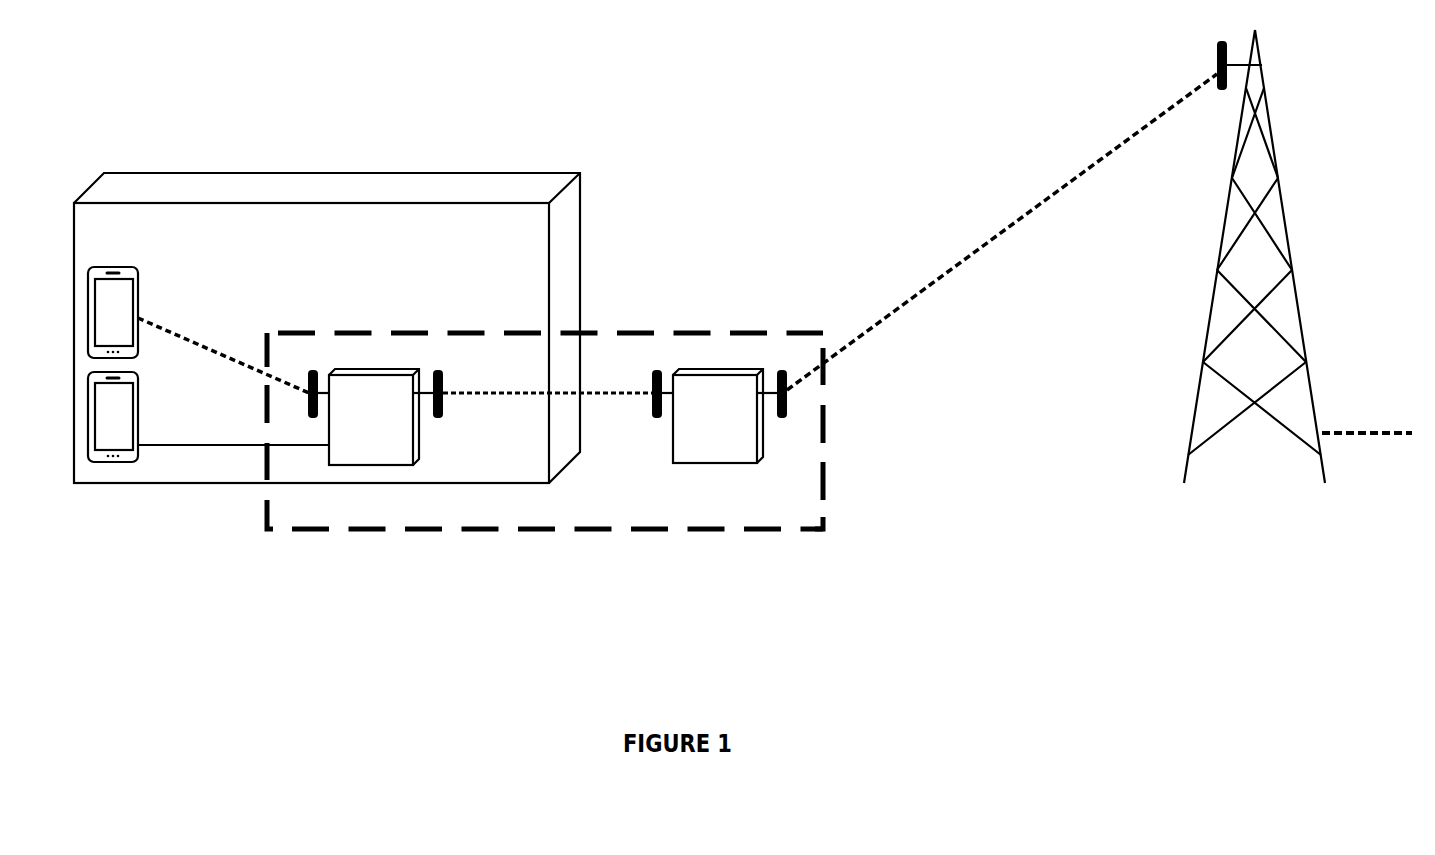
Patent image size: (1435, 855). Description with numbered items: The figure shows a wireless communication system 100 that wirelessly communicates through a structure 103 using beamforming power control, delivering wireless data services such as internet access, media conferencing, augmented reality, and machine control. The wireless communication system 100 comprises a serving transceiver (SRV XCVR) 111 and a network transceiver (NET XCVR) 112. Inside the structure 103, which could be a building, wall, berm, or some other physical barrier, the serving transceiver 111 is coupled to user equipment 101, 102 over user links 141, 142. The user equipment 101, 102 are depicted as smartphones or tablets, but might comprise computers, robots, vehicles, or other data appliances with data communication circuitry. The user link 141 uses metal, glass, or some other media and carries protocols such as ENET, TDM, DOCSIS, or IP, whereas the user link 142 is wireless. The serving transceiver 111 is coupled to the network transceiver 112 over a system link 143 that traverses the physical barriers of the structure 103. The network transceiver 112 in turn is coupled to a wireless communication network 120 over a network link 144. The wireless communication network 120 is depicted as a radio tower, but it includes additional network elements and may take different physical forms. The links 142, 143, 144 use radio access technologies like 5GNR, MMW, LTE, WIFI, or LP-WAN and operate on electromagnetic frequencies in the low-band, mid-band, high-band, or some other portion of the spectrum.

The wireless communication system 100 is at (758, 518).
The user equipment 101 is at (113, 417).
The user equipment 102 is at (113, 312).
The structure 103 is at (395, 234).
The serving transceiver 111 is at (375, 417).
The network transceiver 112 is at (719, 416).
The wireless communication network 120 is at (1270, 118).
The user link 141 is at (155, 443).
The user link 142 is at (176, 336).
The system link 143 is at (459, 393).
The network link 144 is at (1003, 224).